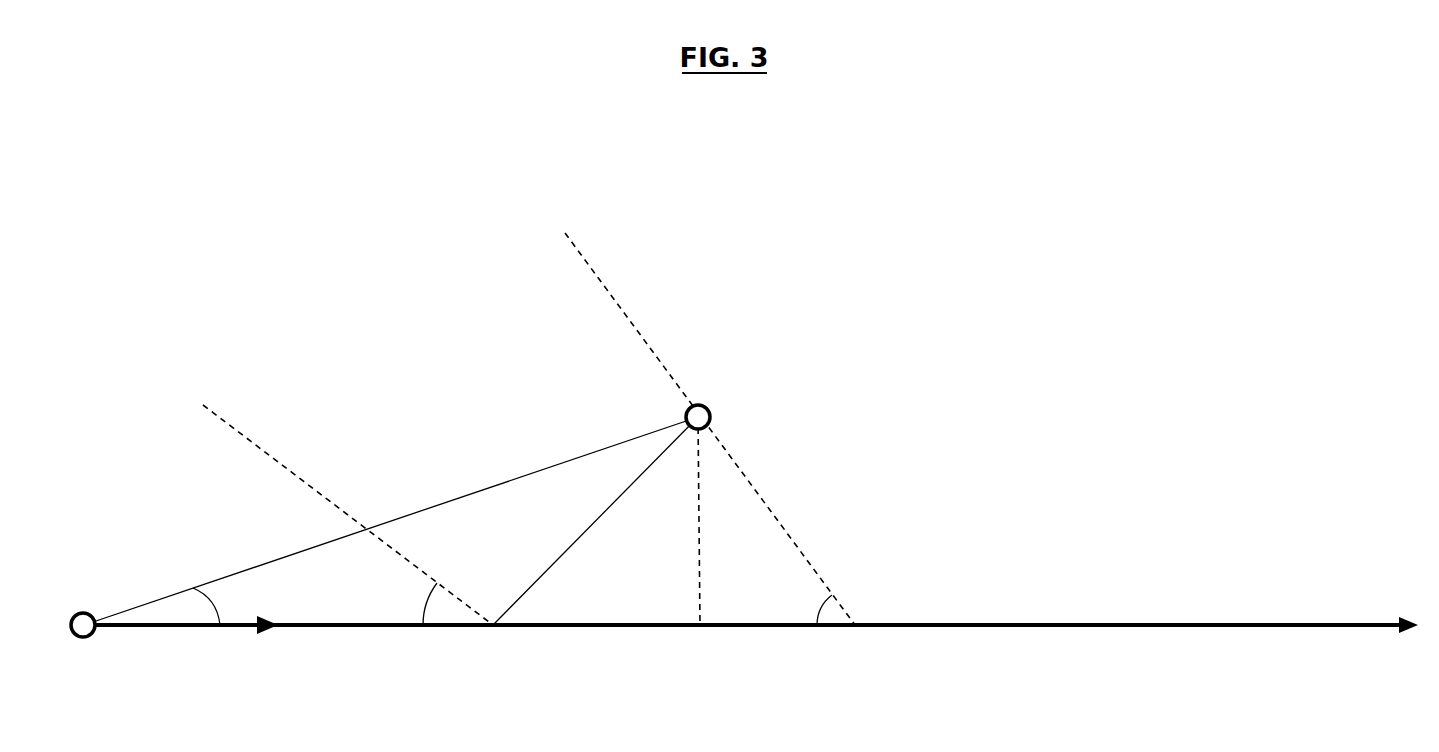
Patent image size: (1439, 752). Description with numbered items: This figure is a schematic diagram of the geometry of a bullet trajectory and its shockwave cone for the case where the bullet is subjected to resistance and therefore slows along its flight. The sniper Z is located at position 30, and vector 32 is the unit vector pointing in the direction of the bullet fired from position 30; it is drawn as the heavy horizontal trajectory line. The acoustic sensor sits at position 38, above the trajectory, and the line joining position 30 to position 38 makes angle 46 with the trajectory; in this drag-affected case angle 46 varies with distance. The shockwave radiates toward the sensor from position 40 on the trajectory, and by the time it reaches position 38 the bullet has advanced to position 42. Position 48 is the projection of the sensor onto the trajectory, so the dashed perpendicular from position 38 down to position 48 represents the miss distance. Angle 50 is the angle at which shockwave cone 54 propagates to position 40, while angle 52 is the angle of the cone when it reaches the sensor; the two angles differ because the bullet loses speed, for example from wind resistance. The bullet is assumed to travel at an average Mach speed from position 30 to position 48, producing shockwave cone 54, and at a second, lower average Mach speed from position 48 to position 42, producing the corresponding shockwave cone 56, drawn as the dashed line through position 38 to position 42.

The position 30 is at (84, 612).
The vector 32 is at (257, 633).
The position 38 is at (708, 408).
The position 40 is at (493, 628).
The position 42 is at (855, 628).
The angle 46 is at (220, 603).
The position 48 is at (700, 628).
The angle 50 is at (418, 604).
The angle 52 is at (807, 603).
The shockwave cone 54 is at (241, 433).
The shockwave cone 56 is at (628, 316).